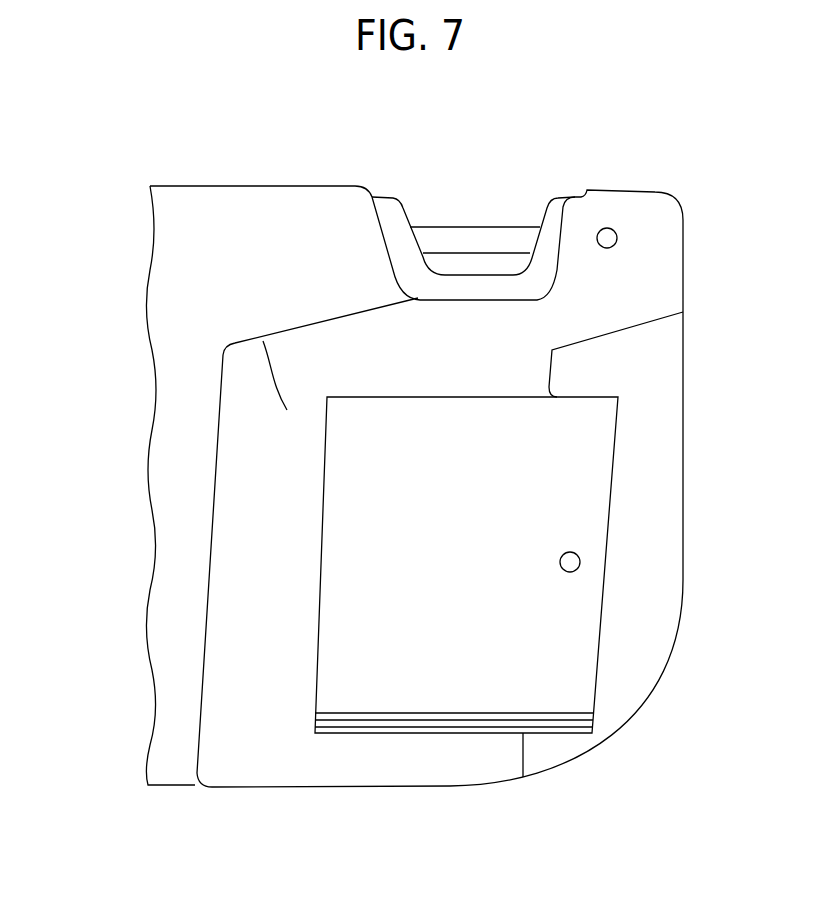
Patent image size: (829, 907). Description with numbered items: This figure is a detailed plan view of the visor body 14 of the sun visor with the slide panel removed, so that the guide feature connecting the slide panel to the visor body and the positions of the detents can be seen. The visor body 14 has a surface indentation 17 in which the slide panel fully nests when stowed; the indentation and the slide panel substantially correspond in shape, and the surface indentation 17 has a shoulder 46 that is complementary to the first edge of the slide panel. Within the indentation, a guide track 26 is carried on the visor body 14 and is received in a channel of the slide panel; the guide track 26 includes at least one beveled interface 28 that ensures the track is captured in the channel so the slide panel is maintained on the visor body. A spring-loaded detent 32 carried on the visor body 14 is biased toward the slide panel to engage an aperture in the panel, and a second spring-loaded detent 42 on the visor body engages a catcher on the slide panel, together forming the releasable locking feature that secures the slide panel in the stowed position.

The visor body 14 is at (167, 693).
The surface indentation 17 is at (240, 740).
The guide track 26 is at (367, 545).
The beveled interface 28 is at (397, 727).
The spring-loaded detent 32 is at (613, 230).
The second spring-loaded detent 42 is at (580, 562).
The shoulder 46 is at (220, 400).